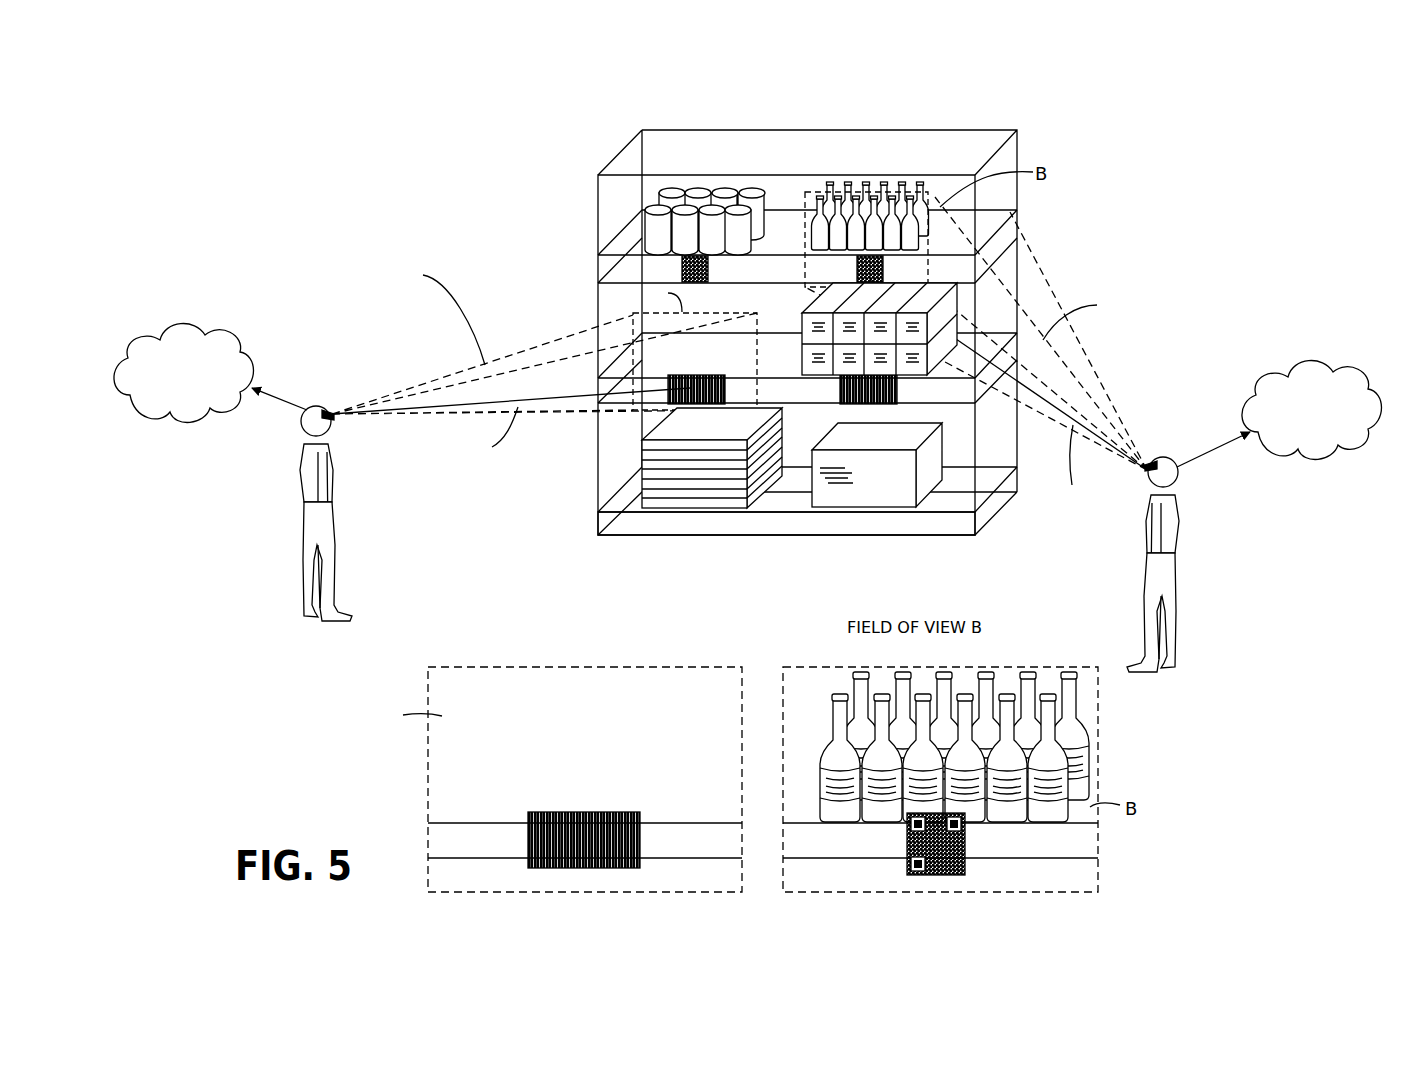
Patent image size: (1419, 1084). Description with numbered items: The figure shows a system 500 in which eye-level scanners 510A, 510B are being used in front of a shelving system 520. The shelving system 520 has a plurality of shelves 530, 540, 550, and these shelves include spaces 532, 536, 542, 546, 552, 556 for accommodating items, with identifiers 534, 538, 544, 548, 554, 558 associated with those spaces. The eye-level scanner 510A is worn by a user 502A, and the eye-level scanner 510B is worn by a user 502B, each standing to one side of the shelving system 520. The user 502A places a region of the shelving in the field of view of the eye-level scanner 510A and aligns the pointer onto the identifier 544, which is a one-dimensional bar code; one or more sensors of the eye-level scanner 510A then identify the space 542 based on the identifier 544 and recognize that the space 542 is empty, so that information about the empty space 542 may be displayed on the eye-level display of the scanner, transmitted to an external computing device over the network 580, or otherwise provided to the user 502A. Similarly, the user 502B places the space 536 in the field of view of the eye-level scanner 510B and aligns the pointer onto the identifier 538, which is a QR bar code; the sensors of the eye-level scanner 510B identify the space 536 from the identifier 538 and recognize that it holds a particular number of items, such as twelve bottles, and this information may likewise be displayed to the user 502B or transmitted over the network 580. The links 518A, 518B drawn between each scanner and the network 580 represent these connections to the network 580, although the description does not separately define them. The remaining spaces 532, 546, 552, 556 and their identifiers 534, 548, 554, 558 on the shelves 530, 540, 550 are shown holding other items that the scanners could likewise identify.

The system 500 is at (465, 200).
The user 502A is at (315, 373).
The user 502B is at (1190, 370).
The eye-level scanner 510A is at (335, 415).
The eye-level scanner 510B is at (1162, 440).
The first network link 518A is at (283, 408).
The second network link 518B is at (1230, 447).
The shelving system 520 is at (552, 170).
The shelf 530 is at (623, 250).
The space 532 is at (710, 190).
The identifier 534 is at (682, 268).
The space 536 is at (937, 180).
The identifier 538 is at (855, 268).
The shelf 540 is at (617, 368).
The space 542 is at (710, 318).
The identifier 544 is at (712, 375).
The space 546 is at (960, 300).
The identifier 548 is at (860, 403).
The shelf 550 is at (622, 505).
The space 552 is at (760, 505).
The identifier 554 is at (690, 537).
The space 556 is at (948, 447).
The identifier 558 is at (862, 537).
The network 580 is at (195, 330).